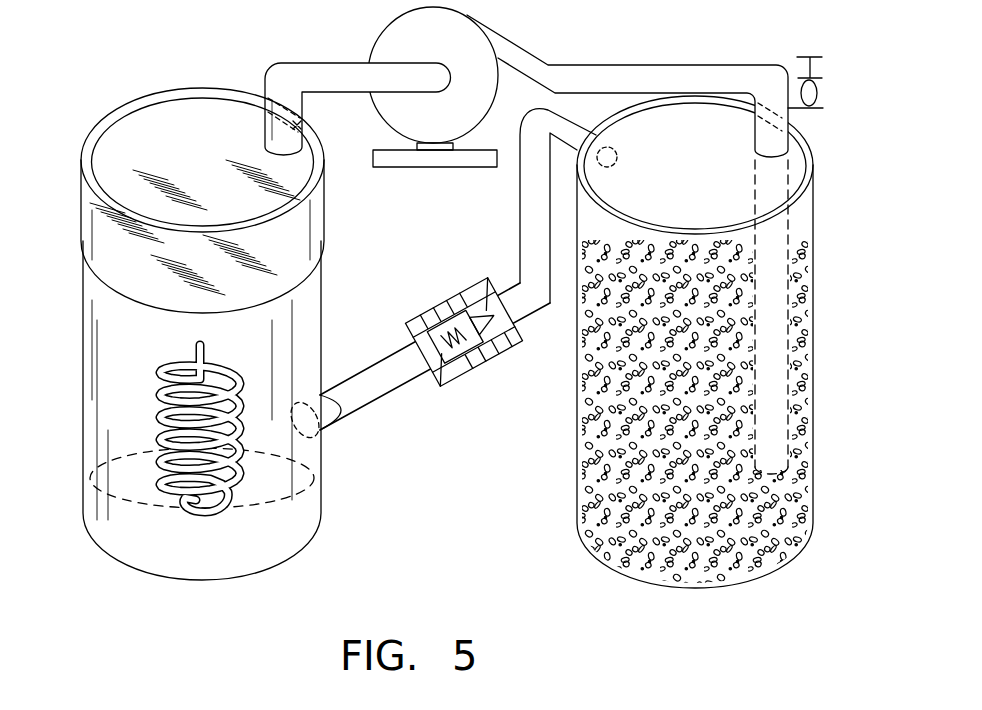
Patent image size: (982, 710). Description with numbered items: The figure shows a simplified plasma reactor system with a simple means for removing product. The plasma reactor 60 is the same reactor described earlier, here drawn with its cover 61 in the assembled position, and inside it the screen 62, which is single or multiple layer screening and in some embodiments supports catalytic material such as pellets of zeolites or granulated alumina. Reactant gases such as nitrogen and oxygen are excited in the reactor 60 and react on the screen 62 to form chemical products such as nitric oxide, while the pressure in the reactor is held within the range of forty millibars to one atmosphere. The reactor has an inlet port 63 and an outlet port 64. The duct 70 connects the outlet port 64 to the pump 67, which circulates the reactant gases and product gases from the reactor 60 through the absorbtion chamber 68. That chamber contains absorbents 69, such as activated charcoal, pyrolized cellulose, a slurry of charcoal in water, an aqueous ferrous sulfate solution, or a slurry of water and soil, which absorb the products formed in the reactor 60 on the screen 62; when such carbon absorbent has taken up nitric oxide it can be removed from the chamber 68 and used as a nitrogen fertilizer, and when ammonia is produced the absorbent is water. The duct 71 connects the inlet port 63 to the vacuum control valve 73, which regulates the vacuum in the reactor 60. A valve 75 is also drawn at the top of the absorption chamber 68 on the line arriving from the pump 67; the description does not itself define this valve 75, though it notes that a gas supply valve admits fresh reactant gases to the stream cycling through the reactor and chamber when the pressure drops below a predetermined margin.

The plasma reactor 60 is at (187, 390).
The cover 61 is at (198, 160).
The screen 62 is at (222, 236).
The inlet port 63 is at (323, 427).
The outlet port 64 is at (309, 128).
The pump 67 is at (385, 35).
The absorbtion chamber 68 is at (577, 443).
The absorbents 69 is at (620, 255).
The duct 70 is at (338, 63).
The duct 71 is at (397, 394).
The vacuum control valve 73 is at (508, 355).
The valve 75 is at (800, 78).